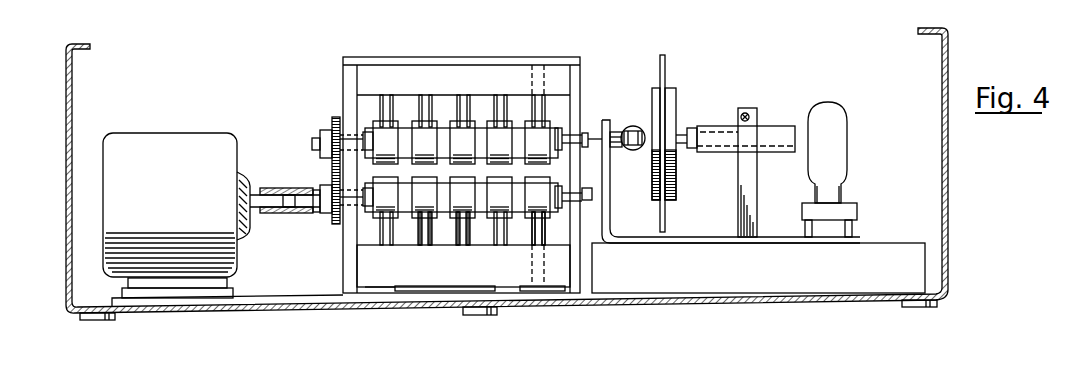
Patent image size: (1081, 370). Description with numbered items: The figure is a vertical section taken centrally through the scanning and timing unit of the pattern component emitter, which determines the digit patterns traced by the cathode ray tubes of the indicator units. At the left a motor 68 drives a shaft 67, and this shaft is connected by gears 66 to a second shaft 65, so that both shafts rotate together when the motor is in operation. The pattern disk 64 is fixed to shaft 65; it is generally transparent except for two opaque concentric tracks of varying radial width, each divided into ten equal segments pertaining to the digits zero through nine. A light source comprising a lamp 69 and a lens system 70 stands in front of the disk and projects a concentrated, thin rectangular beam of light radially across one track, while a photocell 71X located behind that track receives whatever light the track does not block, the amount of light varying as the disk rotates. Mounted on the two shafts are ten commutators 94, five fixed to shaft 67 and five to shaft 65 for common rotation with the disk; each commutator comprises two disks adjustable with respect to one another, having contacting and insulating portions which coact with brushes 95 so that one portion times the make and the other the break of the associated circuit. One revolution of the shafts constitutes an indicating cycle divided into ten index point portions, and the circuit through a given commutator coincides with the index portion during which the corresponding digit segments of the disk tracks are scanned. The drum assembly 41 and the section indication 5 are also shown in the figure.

The motor 68 is at (172, 145).
The shaft 65 is at (320, 143).
The gears 66 is at (331, 175).
The shaft 67 is at (316, 210).
The digit drum assembly 41 is at (467, 102).
The brushes 95 is at (440, 246).
The commutators 94 is at (528, 222).
The section line 5 is at (622, 80).
The photocell 71X is at (628, 141).
The pattern disk 64 is at (667, 77).
The lens system 70 is at (776, 132).
The lamp 69 is at (840, 128).